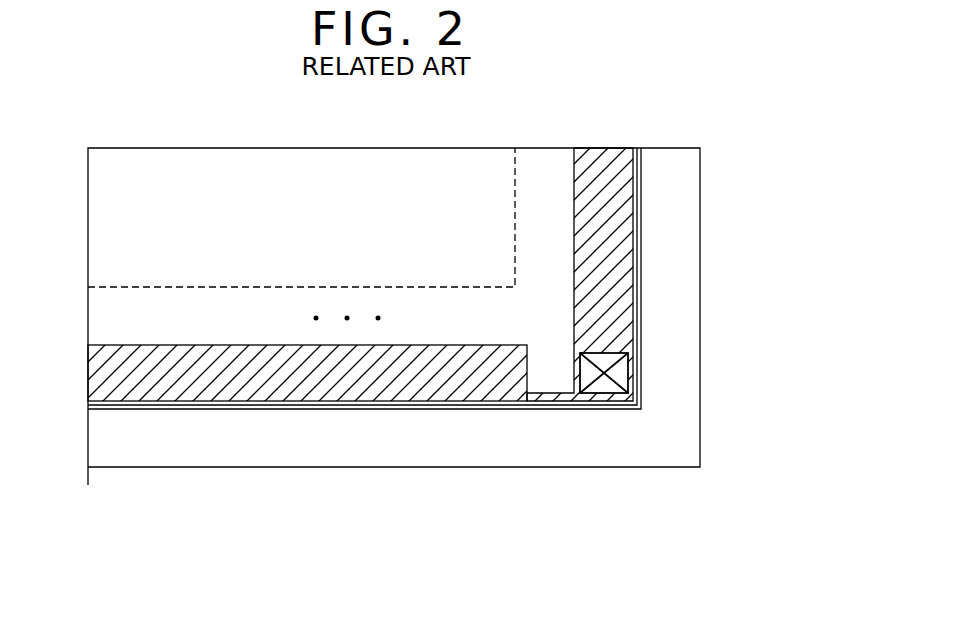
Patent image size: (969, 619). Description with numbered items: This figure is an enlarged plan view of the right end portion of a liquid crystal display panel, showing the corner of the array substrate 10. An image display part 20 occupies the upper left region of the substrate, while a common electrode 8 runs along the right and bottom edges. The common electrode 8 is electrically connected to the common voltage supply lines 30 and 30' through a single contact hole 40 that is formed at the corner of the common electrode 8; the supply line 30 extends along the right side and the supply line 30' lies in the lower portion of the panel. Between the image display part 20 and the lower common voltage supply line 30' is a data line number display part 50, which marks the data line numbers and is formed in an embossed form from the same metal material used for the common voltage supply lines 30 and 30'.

The common electrode 8 is at (637, 248).
The array substrate 10 is at (683, 291).
The image display part 20 is at (243, 287).
The common voltage supply line 30 is at (648, 274).
The common voltage supply line 30' is at (307, 435).
The contact hole 40 is at (625, 372).
The data line number display part 50 is at (492, 330).